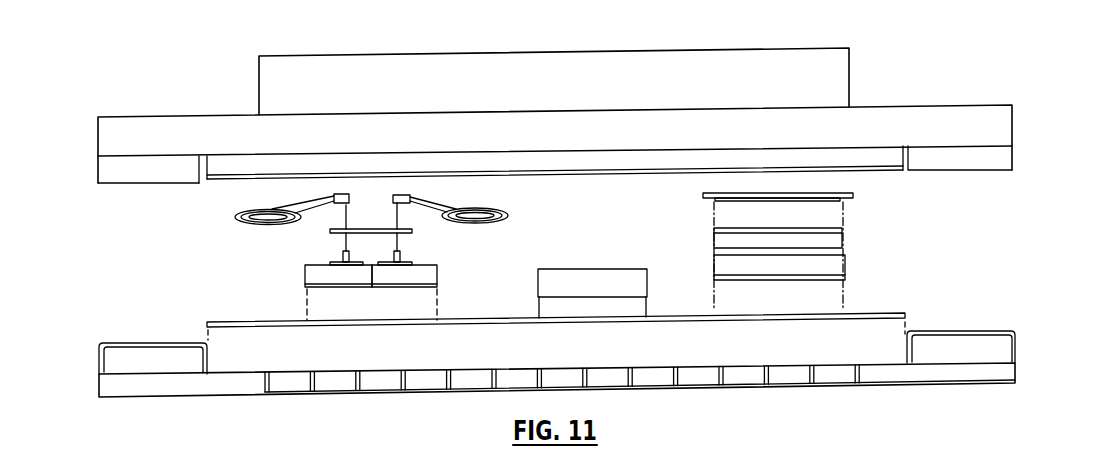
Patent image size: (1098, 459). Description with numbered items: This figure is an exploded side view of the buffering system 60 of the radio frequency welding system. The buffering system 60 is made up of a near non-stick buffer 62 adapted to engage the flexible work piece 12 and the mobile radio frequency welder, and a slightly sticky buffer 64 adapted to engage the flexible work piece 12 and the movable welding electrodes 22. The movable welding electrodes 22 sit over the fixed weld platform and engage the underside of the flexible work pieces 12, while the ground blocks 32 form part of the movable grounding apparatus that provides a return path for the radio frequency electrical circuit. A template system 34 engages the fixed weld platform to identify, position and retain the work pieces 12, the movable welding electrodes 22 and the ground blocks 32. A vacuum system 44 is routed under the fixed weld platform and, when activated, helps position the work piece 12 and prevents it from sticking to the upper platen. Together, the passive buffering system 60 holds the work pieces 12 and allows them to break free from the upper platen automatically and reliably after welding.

The flexible work piece 12 is at (237, 220).
The movable welding electrode 22 is at (843, 267).
The ground block 32 is at (1014, 338).
The template system 34 is at (905, 313).
The vacuum system 44 is at (287, 405).
The buffering system 60 is at (223, 180).
The near non-stick buffer 62 is at (880, 172).
The slightly sticky buffer 64 is at (330, 231).